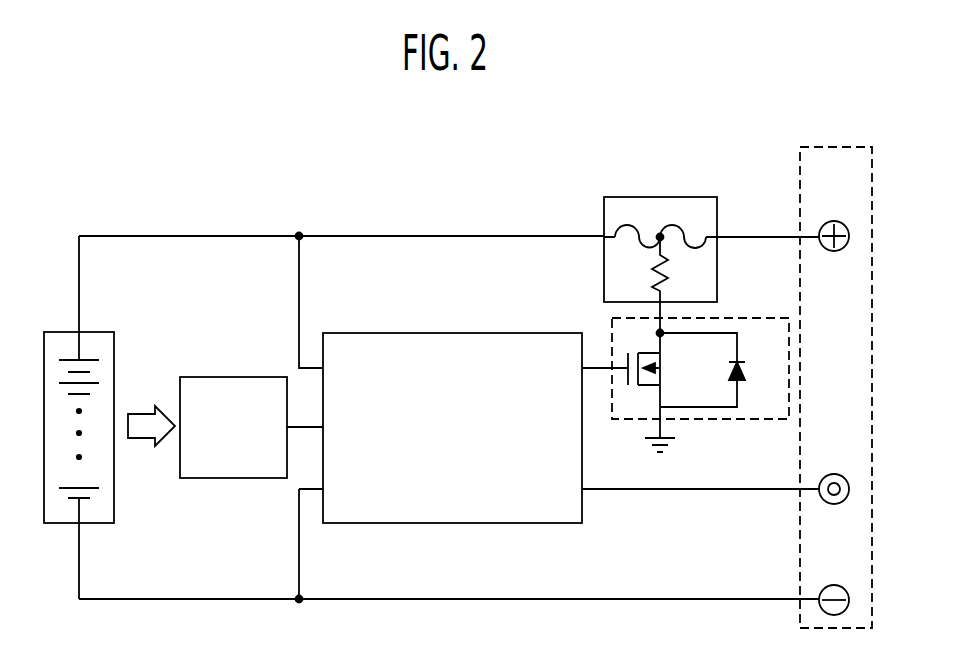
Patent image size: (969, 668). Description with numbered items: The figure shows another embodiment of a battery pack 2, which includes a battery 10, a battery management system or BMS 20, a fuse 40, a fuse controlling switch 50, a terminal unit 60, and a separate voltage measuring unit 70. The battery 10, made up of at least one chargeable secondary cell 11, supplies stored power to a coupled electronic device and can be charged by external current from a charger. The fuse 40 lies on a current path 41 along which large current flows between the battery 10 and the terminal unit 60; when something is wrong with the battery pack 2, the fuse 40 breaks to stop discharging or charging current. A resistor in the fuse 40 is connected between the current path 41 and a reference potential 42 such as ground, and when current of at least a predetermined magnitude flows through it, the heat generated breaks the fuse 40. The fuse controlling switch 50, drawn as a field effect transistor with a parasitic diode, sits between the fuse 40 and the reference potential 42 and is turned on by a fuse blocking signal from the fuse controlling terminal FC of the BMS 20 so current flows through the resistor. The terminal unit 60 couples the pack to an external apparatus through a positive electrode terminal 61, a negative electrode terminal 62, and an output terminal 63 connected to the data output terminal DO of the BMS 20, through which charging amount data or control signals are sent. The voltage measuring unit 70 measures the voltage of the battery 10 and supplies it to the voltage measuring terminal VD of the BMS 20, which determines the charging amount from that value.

The battery pack 2 is at (684, 114).
The battery 10 is at (77, 417).
The cell 11 is at (63, 359).
The battery management system (BMS) 20 is at (548, 333).
The fuse 40 is at (662, 197).
The current path 41 is at (755, 236).
The reference potential 42 is at (677, 447).
The fuse controlling switch 50 is at (752, 318).
The terminal unit 60 is at (836, 358).
The positive electrode terminal 61 is at (836, 221).
The negative electrode terminal 62 is at (836, 585).
The output terminal 63 is at (836, 474).
The voltage measuring unit 70 is at (236, 377).